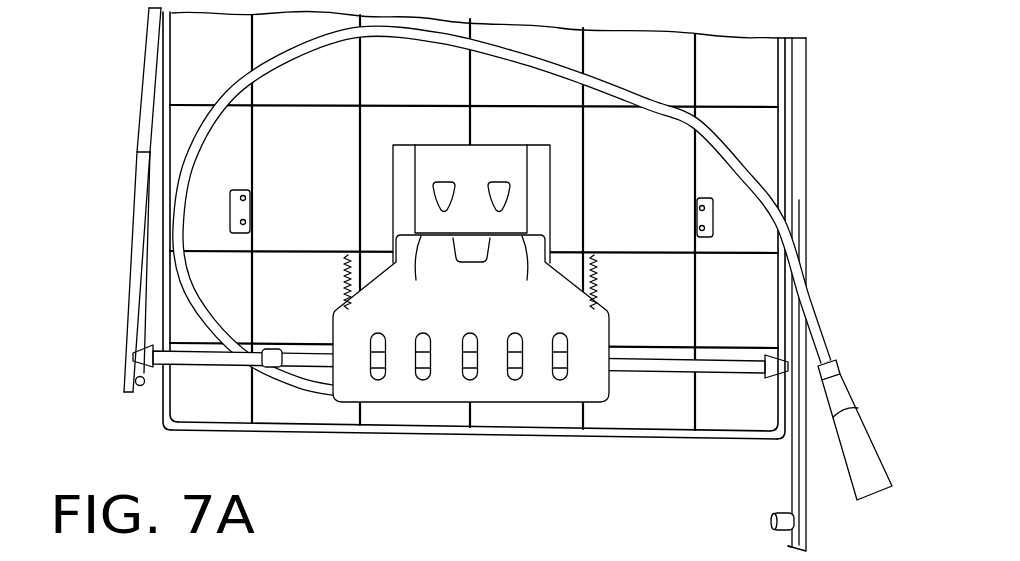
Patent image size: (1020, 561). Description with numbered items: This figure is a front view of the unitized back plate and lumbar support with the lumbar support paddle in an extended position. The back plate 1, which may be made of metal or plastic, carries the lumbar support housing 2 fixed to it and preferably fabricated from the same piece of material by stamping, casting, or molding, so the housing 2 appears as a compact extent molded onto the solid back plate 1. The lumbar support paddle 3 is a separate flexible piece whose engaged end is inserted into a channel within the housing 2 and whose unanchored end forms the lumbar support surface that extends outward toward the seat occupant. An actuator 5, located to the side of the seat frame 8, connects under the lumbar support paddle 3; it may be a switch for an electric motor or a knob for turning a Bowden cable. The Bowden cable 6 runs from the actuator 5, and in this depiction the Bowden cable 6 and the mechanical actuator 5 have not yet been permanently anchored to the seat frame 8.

The back plate 1 is at (700, 72).
The lumbar support housing 2 is at (452, 155).
The lumbar support paddle 3 is at (400, 390).
The actuator 5 is at (860, 445).
The Bowden cable 6 is at (670, 120).
The seat frame 8 is at (798, 168).